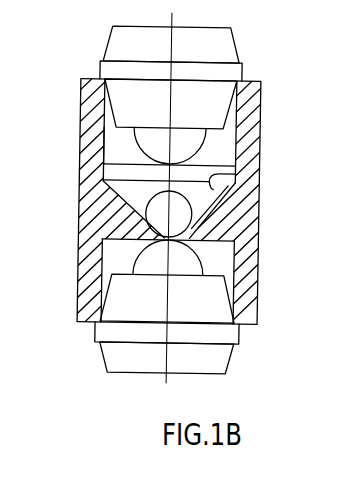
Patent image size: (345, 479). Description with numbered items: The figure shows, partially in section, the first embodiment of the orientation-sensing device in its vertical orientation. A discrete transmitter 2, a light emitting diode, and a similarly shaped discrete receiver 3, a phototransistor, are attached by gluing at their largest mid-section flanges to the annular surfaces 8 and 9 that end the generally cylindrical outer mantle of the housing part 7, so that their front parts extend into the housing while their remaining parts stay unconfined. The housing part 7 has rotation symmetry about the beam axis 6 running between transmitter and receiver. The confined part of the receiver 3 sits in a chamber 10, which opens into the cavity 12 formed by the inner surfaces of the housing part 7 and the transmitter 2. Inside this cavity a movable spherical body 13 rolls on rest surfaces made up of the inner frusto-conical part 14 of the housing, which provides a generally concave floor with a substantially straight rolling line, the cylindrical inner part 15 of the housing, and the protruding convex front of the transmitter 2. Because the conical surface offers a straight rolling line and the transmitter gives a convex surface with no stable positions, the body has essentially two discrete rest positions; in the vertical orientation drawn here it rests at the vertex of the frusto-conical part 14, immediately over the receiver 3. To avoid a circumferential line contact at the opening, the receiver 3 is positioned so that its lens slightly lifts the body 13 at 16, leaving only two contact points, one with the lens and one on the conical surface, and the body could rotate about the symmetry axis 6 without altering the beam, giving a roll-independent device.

The transmitter 2 is at (220, 68).
The receiver 3 is at (230, 337).
The beam axis 6 is at (175, 382).
The housing part 7 is at (235, 215).
The annular surface 8 is at (95, 78).
The annular surface 9 is at (96, 325).
The chamber 10 is at (220, 258).
The cavity 12 is at (217, 145).
The movable spherical body 13 is at (160, 207).
The inner frusto-conical part 14 is at (236, 176).
The cylindrical inner part 15 is at (108, 143).
The lifting point 16 is at (160, 243).